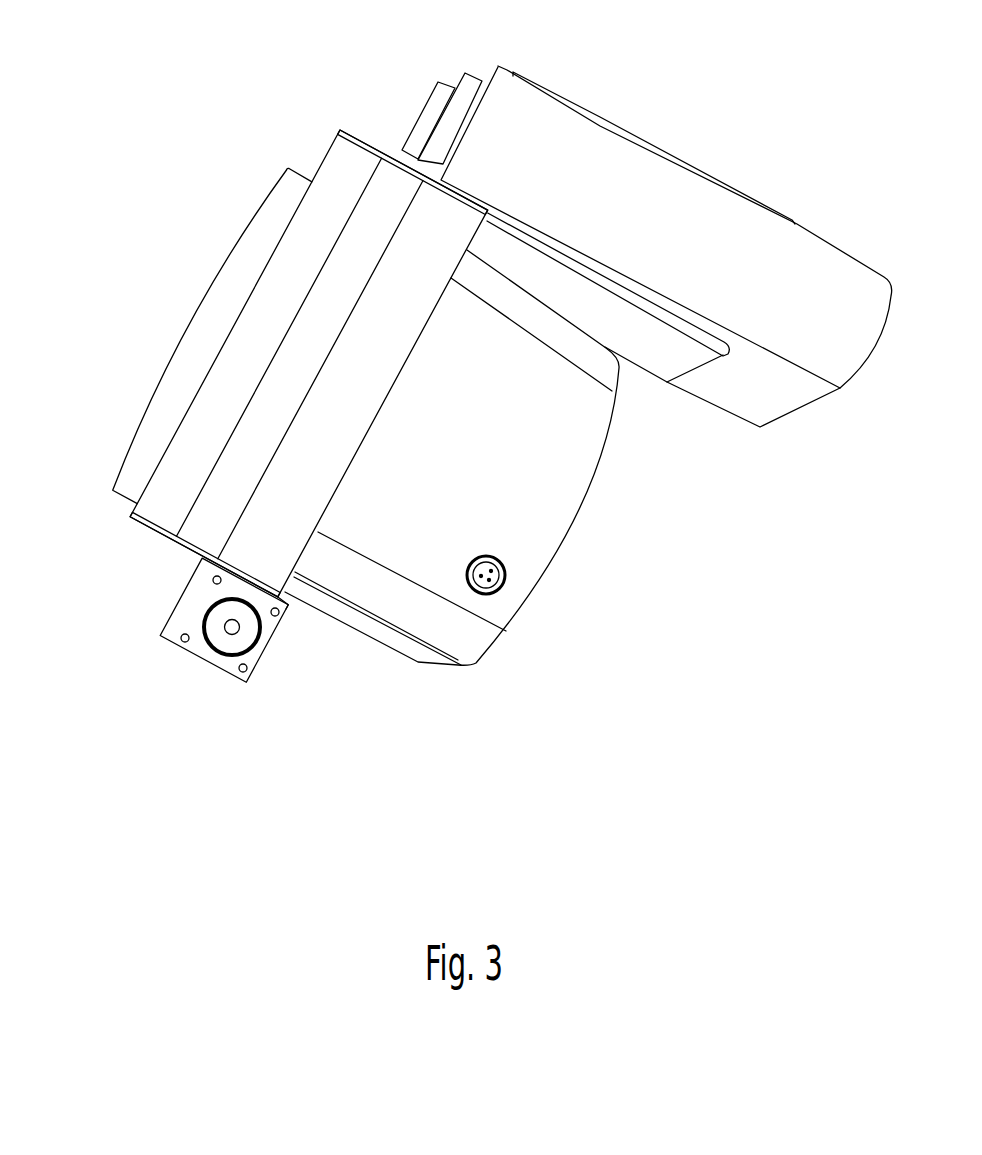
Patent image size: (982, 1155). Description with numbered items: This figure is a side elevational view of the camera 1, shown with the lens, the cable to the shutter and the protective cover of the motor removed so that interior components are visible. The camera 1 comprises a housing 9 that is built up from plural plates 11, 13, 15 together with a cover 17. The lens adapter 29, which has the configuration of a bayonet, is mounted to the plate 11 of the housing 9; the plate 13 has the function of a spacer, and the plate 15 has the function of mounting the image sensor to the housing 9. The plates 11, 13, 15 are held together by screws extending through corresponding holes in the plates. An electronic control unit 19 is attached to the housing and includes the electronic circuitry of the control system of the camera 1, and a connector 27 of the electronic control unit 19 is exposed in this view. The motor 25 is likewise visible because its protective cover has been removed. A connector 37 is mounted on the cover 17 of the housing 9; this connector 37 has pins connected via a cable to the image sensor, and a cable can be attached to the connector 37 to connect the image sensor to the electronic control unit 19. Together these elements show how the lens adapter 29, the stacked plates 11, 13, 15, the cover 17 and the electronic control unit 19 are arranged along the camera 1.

The camera 1 is at (171, 197).
The housing 9 is at (586, 695).
The plate 11 is at (143, 528).
The plate 13 is at (187, 550).
The plate 15 is at (292, 602).
The cover 17 is at (478, 662).
The electronic control unit 19 is at (792, 413).
The motor 25 is at (200, 660).
The connector 27 is at (452, 84).
The lens adapter 29 is at (113, 490).
The connector 37 is at (505, 585).